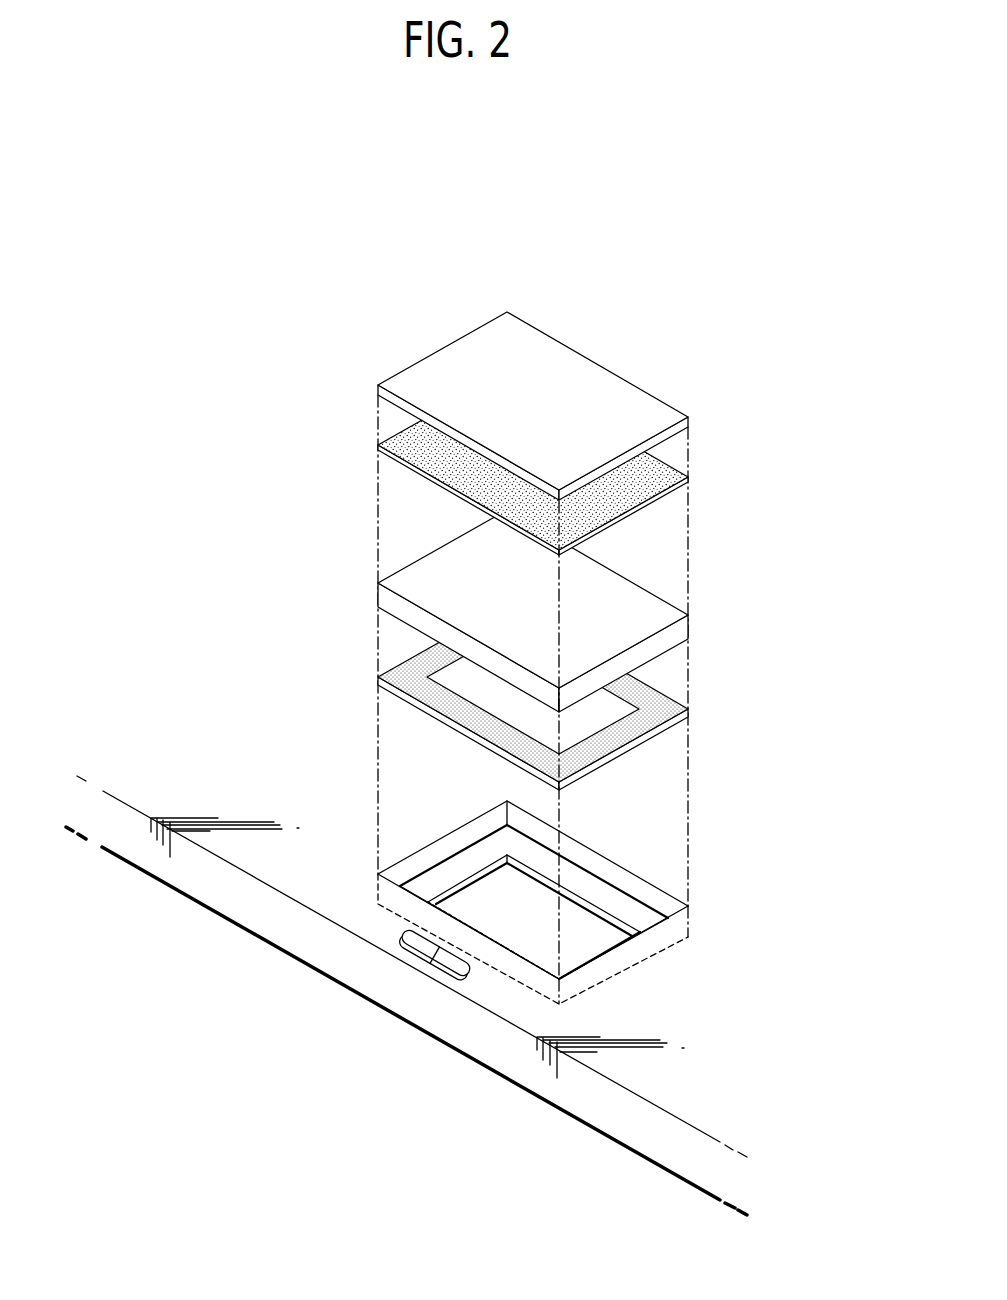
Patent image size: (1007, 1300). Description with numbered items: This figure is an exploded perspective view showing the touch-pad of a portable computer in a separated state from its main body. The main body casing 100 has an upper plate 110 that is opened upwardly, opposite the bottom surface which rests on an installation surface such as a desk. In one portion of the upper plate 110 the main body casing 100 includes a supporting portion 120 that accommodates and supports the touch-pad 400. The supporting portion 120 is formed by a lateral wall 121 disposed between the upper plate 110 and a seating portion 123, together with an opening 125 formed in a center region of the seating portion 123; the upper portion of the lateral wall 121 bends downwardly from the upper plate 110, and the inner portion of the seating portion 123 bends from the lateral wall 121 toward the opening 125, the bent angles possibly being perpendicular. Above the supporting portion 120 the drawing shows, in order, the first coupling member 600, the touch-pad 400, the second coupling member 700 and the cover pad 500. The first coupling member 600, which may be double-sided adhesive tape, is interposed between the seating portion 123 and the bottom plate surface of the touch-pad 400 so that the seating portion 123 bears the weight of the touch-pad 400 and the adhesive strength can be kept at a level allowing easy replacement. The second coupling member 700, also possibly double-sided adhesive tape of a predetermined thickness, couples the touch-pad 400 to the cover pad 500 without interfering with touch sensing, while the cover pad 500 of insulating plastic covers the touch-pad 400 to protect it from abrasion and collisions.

The main body casing 100 is at (668, 1160).
The upper plate 110 is at (297, 883).
The supporting portion 120 is at (780, 870).
The lateral wall 121 is at (657, 893).
The seating portion 123 is at (642, 915).
The opening 125 is at (605, 945).
The touch-pad 400 is at (657, 610).
The cover pad 500 is at (645, 407).
The first coupling member 600 is at (658, 708).
The second coupling member 700 is at (668, 463).